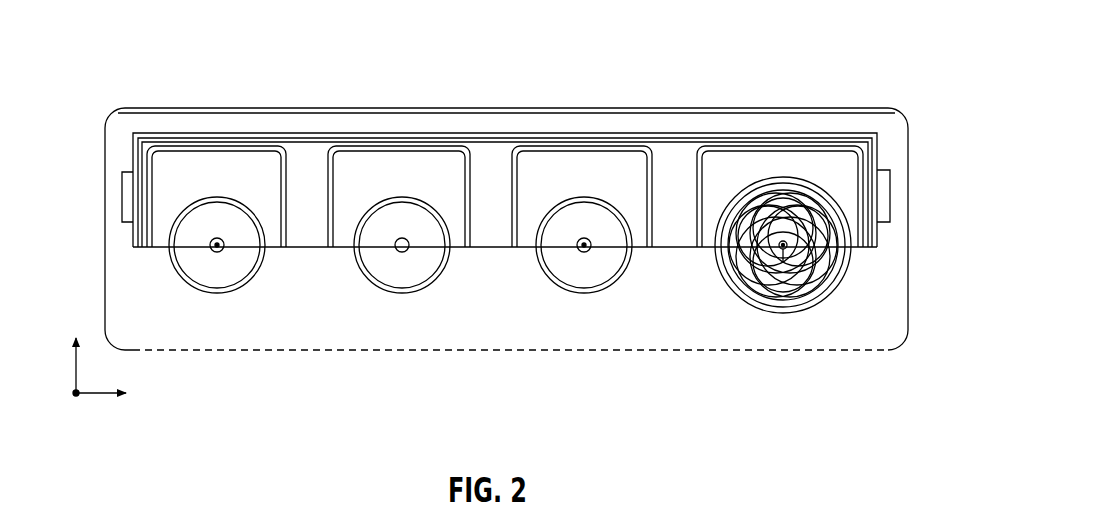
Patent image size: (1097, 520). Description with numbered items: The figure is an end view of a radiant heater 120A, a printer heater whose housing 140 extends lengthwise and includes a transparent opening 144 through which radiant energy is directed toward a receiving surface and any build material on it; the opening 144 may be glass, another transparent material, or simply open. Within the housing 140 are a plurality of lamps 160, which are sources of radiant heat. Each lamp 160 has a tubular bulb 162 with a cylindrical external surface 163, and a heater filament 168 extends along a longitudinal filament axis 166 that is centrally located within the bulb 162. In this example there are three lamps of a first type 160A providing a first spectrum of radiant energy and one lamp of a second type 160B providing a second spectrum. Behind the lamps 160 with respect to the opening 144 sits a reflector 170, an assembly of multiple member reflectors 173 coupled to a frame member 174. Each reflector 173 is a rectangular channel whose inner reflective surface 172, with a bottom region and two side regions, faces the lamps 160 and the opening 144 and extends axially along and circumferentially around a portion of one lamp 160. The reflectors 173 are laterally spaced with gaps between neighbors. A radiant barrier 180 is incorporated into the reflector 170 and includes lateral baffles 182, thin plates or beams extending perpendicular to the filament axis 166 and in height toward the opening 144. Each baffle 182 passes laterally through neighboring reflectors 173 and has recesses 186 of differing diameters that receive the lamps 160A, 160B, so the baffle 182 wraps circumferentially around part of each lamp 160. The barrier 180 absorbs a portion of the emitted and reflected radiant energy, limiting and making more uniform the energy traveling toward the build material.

The radiant heater 120A is at (147, 57).
The housing 140 is at (312, 108).
The transparent opening 144 is at (218, 352).
The lamps 160 is at (172, 265).
The first type of lamp 160A is at (517, 253).
The second type of lamp 160B is at (789, 305).
The tubular bulb 162 is at (444, 258).
The cylindrical external surface 163 is at (380, 192).
The longitudinal filament axis 166 is at (218, 253).
The heater filament 168 is at (402, 253).
The reflector 170 is at (462, 152).
The reflective surface 172 is at (147, 167).
The member reflectors 173 is at (470, 157).
The frame member 174 is at (833, 133).
The radiant barrier 180 is at (606, 163).
The lateral baffles 182 is at (850, 157).
The recesses 186 is at (167, 232).